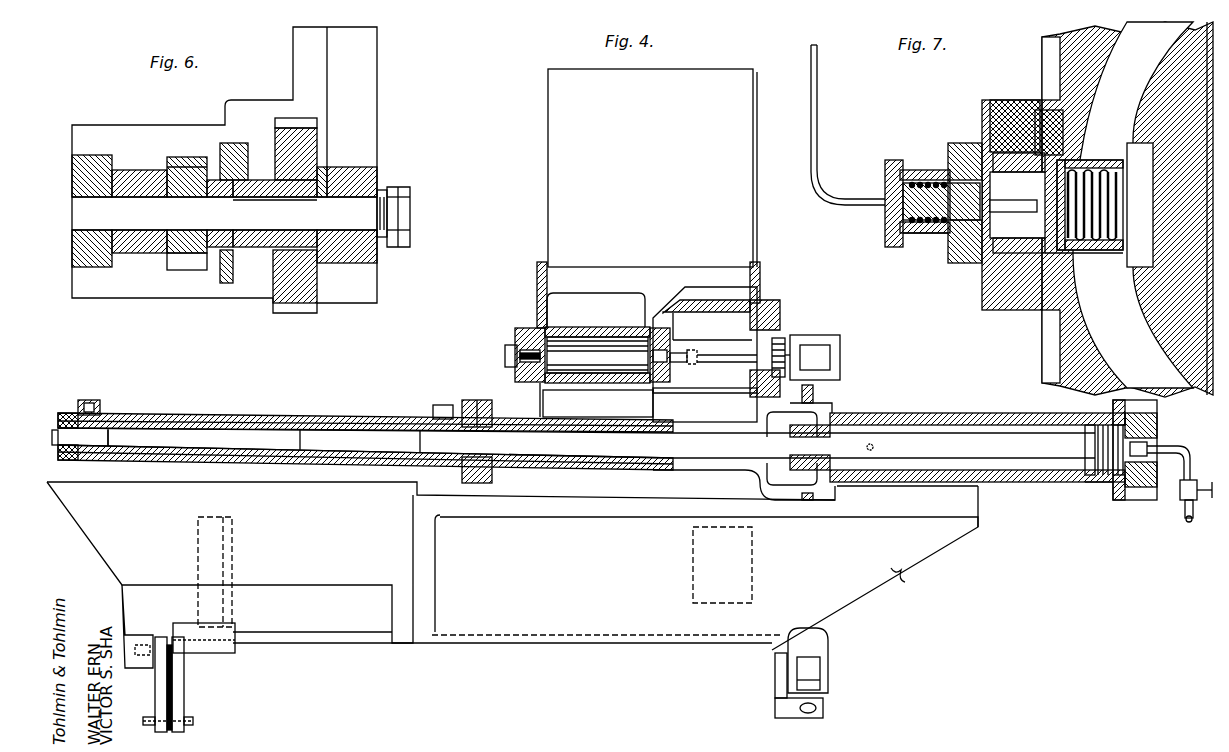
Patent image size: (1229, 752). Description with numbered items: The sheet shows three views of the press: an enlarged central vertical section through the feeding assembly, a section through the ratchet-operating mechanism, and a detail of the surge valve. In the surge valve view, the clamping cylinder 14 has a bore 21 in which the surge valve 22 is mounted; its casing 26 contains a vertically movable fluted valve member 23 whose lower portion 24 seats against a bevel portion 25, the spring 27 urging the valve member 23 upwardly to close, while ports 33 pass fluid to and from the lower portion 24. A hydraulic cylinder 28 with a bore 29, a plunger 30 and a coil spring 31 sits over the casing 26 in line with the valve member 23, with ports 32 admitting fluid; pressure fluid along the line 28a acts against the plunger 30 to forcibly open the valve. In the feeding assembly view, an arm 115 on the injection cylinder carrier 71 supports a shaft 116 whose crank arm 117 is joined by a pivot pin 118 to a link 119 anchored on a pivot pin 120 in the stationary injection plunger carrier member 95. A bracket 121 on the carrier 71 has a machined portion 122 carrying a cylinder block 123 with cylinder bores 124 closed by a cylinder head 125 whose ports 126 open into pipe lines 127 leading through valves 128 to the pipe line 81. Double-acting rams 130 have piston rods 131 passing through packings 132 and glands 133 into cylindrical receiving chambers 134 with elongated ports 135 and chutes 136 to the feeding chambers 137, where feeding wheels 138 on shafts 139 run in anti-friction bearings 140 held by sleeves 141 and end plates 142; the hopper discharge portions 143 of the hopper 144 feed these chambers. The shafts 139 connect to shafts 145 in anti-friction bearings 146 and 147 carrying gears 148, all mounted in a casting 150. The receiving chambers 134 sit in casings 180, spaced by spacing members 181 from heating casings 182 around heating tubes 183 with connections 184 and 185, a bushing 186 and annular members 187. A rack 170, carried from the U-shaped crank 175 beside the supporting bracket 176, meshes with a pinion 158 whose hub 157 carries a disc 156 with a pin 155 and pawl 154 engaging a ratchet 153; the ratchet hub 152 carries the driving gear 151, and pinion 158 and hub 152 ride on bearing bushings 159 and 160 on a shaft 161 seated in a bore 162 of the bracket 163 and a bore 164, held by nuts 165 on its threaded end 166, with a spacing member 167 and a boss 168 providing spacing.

In FIG. 7, the clamping cylinder 14 is at (1070, 350).
In FIG. 7, the bore 21 is at (1022, 257).
In FIG. 7, the surge valve 22 is at (1012, 235).
In FIG. 7, the fluted valve member 23 is at (1000, 222).
In FIG. 7, the lower portion of valve member 24 is at (1062, 166).
In FIG. 7, the bevel portion 25 is at (1042, 153).
In FIG. 7, the surge valve casing 26 is at (1013, 152).
In FIG. 7, the spring 27 is at (1115, 203).
In FIG. 7, the hydraulic cylinder 28 is at (933, 182).
In FIG. 7, the line 28a is at (817, 99).
In FIG. 7, the bore 29 is at (917, 235).
In FIG. 7, the plunger 30 is at (938, 225).
In FIG. 7, the coil spring 31 is at (910, 173).
In FIG. 7, the ports 32 is at (965, 147).
In FIG. 7, the ports 33 is at (1080, 258).
In FIG. 4, the injection cylinder carrier 71 is at (441, 562).
In FIG. 4, the pipe line 81 is at (1185, 514).
In FIG. 4, the injection plunger carrier member 95 is at (137, 635).
In FIG. 4, the arm 115 is at (232, 608).
In FIG. 4, the shaft 116 is at (360, 640).
In FIG. 4, the crank arm 117 is at (184, 689).
In FIG. 4, the pivot pin 118 is at (190, 718).
In FIG. 4, the link 119 is at (172, 675).
In FIG. 4, the pivot pin 120 is at (160, 640).
In FIG. 4, the bracket 121 is at (437, 578).
In FIG. 4, the machined portion 122 is at (967, 497).
In FIG. 4, the cylinder block 123 is at (1047, 484).
In FIG. 4, the cylinder bores 124 is at (1078, 483).
In FIG. 4, the cylinder head 125 is at (1150, 428).
In FIG. 4, the ports 126 is at (1148, 452).
In FIG. 4, the pipe lines 127 is at (1183, 450).
In FIG. 4, the valves 128 is at (1180, 490).
In FIG. 4, the double-acting rams 130 is at (1085, 452).
In FIG. 4, the piston rods 131 is at (900, 432).
In FIG. 4, the packings 132 is at (826, 448).
In FIG. 4, the glands 133 is at (790, 445).
In FIG. 4, the cylindrical receiving chambers 134 is at (292, 470).
In FIG. 4, the elongated ports 135 is at (645, 416).
In FIG. 4, the chutes 136 is at (598, 404).
In FIG. 4, the feeding chambers 137 is at (588, 340).
In FIG. 4, the feeding wheels 138 is at (620, 345).
In FIG. 4, the shafts 139 is at (688, 356).
In FIG. 4, the anti-friction bearings 140 is at (515, 358).
In FIG. 4, the sleeves 141 is at (527, 338).
In FIG. 4, the end plates 142 is at (515, 340).
In FIG. 4, the hopper discharge portions 143 is at (598, 302).
In FIG. 4, the hopper 144 is at (648, 158).
In FIG. 4, the shafts 145 is at (718, 356).
In FIG. 4, the anti-friction bearings 146 is at (760, 358).
In FIG. 4, the anti-friction bearings 147 is at (795, 410).
In FIG. 4, the gears 148 is at (781, 336).
In FIG. 4, the casting 150 is at (752, 300).
In FIG. 4, the rack 170 is at (815, 398).
In FIG. 4, the U-shaped crank 175 is at (775, 684).
In FIG. 4, the supporting bracket 176 is at (693, 583).
In FIG. 4, the casings 180 is at (240, 470).
In FIG. 4, the spacing members 181 is at (472, 400).
In FIG. 4, the heating casings 182 is at (433, 413).
In FIG. 4, the heating tubes 183 is at (282, 420).
In FIG. 4, the connections 184 is at (100, 405).
In FIG. 4, the connections 185 is at (460, 402).
In FIG. 4, the bushing 186 is at (108, 450).
In FIG. 4, the annular members 187 is at (66, 463).
In FIG. 6, the driving gear 151 is at (300, 125).
In FIG. 6, the hub 152 is at (257, 180).
In FIG. 6, the ratchet 153 is at (247, 253).
In FIG. 6, the pawl 154 is at (237, 137).
In FIG. 6, the pin 155 is at (220, 160).
In FIG. 6, the disc 156 is at (227, 270).
In FIG. 6, the hub 157 is at (213, 250).
In FIG. 6, the pinion 158 is at (173, 268).
In FIG. 6, the bearing bushing 159 is at (173, 230).
In FIG. 6, the bearing bushing 160 is at (277, 230).
In FIG. 6, the shaft 161 is at (77, 207).
In FIG. 6, the bore 162 is at (72, 173).
In FIG. 6, the bracket 163 is at (72, 250).
In FIG. 6, the bore 164 is at (370, 180).
In FIG. 6, the nuts 165 is at (392, 190).
In FIG. 6, the threaded end 166 is at (410, 210).
In FIG. 6, the spacing member 167 is at (128, 170).
In FIG. 6, the boss 168 is at (323, 167).